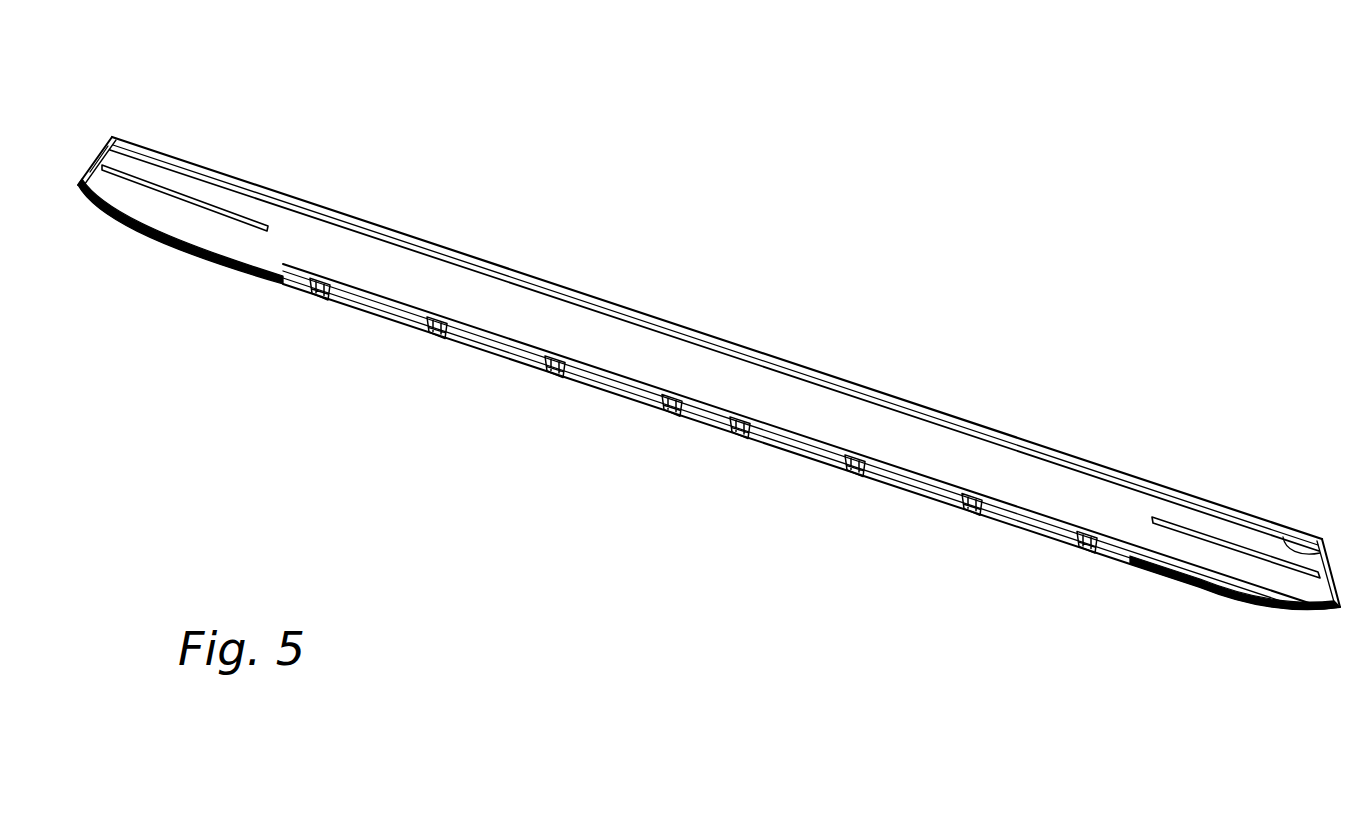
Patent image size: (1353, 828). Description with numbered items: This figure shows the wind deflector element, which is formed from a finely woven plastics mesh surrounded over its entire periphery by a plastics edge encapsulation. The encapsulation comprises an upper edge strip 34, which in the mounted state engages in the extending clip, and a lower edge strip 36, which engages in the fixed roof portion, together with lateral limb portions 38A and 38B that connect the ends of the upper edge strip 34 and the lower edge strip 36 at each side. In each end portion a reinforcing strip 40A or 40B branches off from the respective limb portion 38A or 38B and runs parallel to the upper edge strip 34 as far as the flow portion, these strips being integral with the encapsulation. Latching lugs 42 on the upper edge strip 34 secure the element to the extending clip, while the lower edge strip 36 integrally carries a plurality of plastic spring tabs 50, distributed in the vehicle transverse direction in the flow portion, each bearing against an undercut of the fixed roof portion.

The upper edge strip 34 is at (709, 374).
The lower edge strip 36 is at (619, 392).
The lateral limb portion 38A is at (1235, 546).
The lateral limb portion 38B is at (180, 203).
The reinforcing strip 40A is at (1168, 528).
The reinforcing strip 40B is at (214, 208).
The latching lugs 42 is at (491, 266).
The spring tabs 50 is at (437, 342).